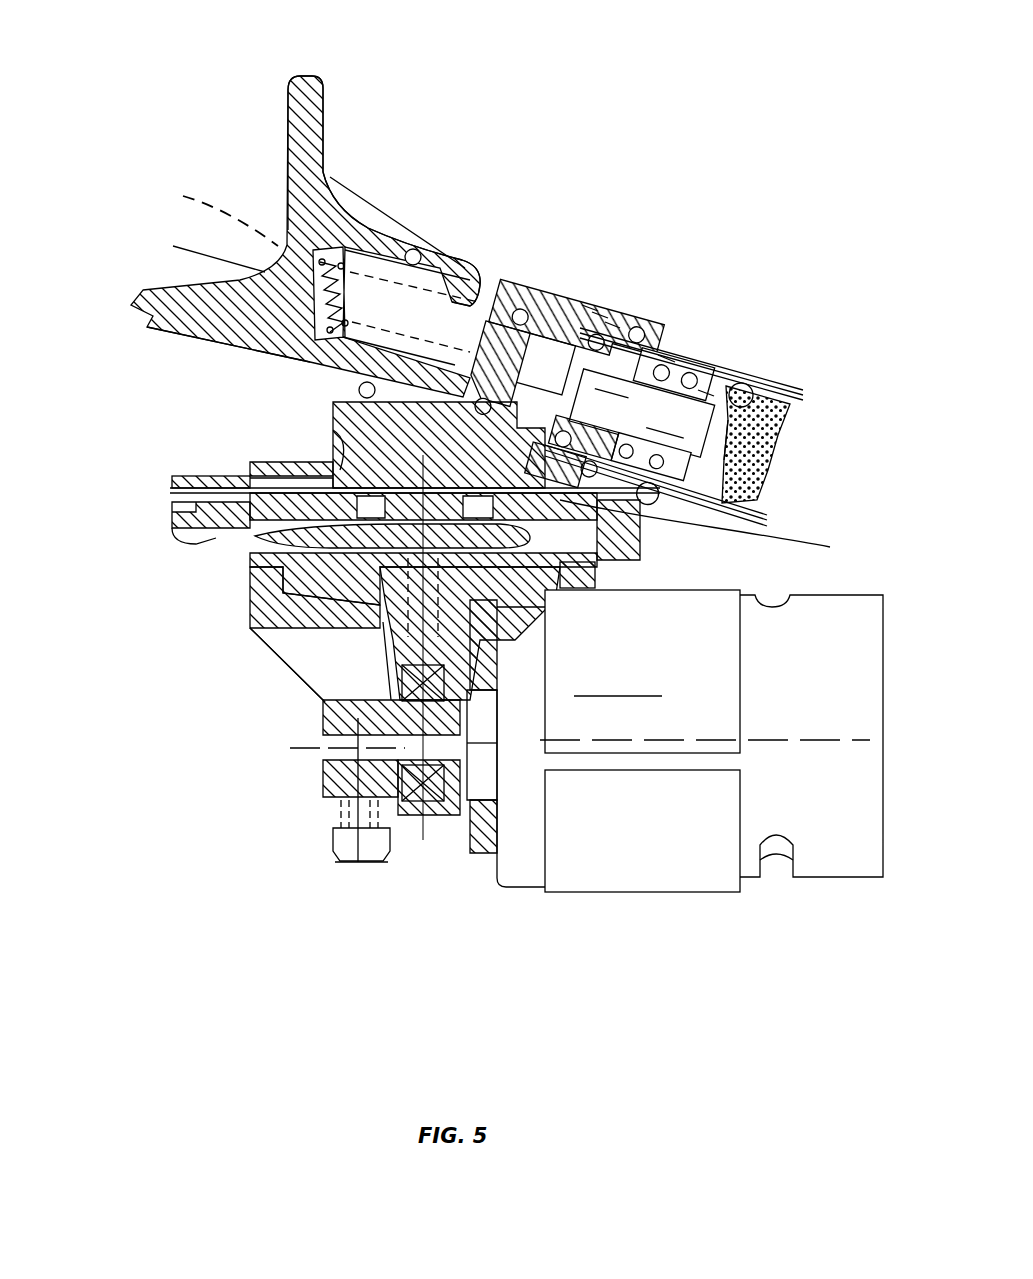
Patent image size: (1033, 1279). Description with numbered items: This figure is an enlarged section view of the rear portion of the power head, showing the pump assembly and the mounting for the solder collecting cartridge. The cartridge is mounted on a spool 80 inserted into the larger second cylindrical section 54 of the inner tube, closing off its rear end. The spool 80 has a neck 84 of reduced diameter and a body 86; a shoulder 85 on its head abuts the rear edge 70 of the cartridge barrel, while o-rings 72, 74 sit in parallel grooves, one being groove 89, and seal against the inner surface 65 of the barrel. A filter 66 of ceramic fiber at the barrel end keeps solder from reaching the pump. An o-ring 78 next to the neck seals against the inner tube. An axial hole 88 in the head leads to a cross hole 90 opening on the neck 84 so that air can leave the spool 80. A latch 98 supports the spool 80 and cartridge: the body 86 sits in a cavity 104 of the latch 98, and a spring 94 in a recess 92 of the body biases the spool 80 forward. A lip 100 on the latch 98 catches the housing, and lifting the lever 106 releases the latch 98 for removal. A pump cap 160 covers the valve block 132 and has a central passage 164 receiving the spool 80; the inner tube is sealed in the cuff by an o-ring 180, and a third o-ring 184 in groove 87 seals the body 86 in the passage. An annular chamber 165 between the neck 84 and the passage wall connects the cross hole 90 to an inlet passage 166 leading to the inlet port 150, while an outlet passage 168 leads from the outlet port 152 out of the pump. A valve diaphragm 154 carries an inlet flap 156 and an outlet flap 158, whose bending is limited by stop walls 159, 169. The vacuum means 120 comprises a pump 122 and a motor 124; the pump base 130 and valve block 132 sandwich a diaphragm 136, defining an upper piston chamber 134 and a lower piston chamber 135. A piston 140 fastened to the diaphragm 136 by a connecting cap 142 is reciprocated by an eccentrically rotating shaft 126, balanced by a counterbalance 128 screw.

The second cylindrical section 54 is at (756, 369).
The inner surface 65 is at (752, 398).
The filter 66 is at (760, 462).
The rear edge 70 is at (762, 486).
The o-ring 72 is at (702, 378).
The o-ring 74 is at (688, 370).
The o-ring 78 is at (612, 316).
The spool 80 is at (485, 300).
The neck 84 is at (592, 304).
The shoulder 85 is at (634, 328).
The body 86 is at (317, 337).
The groove 87 is at (518, 290).
The axial hole 88 is at (652, 420).
The groove 89 is at (690, 378).
The cross hole 90 is at (550, 292).
The recess 92 is at (470, 362).
The spring 94 is at (215, 214).
The latch 98 is at (342, 180).
The lip 100 is at (150, 300).
The cavity 104 is at (292, 327).
The lever 106 is at (333, 86).
The vacuum means 120 is at (292, 960).
The pump 122 is at (228, 686).
The motor 124 is at (545, 893).
The eccentrically rotating shaft 126 is at (324, 788).
The counterbalance 128 is at (330, 853).
The pump base 130 is at (245, 598).
The valve block 132 is at (192, 534).
The upper piston chamber 134 is at (300, 538).
The lower piston chamber 135 is at (300, 600).
The diaphragm 136 is at (594, 552).
The piston 140 is at (388, 658).
The connecting cap 142 is at (172, 492).
The inlet port 150 is at (598, 547).
The outlet port 152 is at (247, 472).
The valve diaphragm 154 is at (240, 484).
The inlet flap 156 is at (660, 538).
The outlet flap 158 is at (300, 470).
The stop wall 159 is at (540, 522).
The pump cap 160 is at (330, 430).
The central passage 164 is at (597, 310).
The annular chamber 165 is at (562, 306).
The inlet passage 166 is at (762, 518).
The outlet passage 168 is at (322, 486).
The stop wall 169 is at (325, 424).
The o-ring 180 is at (668, 365).
The third o-ring 184 is at (530, 296).